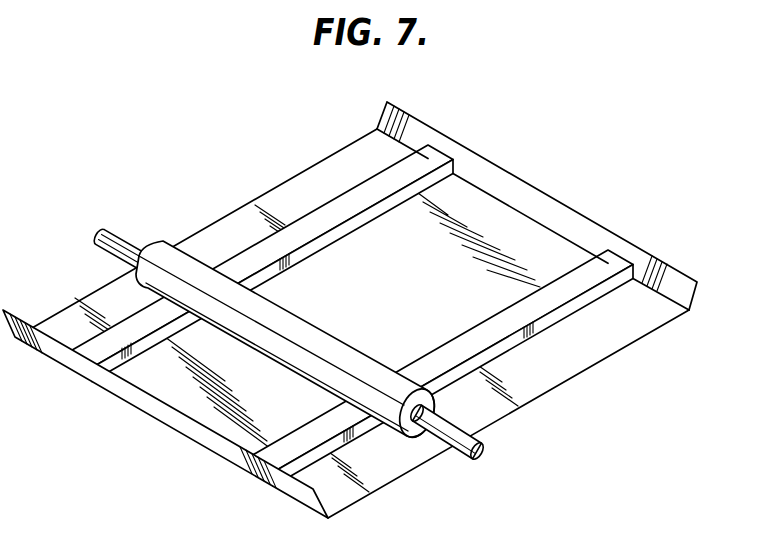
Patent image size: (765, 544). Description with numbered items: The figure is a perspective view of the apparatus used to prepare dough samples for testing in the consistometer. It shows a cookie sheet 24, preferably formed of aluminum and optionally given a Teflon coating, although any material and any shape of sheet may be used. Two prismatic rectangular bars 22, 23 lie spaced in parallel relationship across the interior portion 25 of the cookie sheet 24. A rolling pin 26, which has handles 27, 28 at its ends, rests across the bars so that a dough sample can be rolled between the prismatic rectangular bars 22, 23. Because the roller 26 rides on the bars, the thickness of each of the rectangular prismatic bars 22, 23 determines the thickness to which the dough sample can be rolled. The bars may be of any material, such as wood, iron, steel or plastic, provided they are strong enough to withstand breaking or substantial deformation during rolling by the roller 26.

The prismatic rectangular bar 22 is at (337, 203).
The prismatic rectangular bar 23 is at (547, 322).
The cookie sheet 24 is at (592, 230).
The interior portion 25 is at (213, 227).
The rolling pin 26 is at (290, 323).
The handle 27 is at (457, 452).
The handle 28 is at (98, 234).